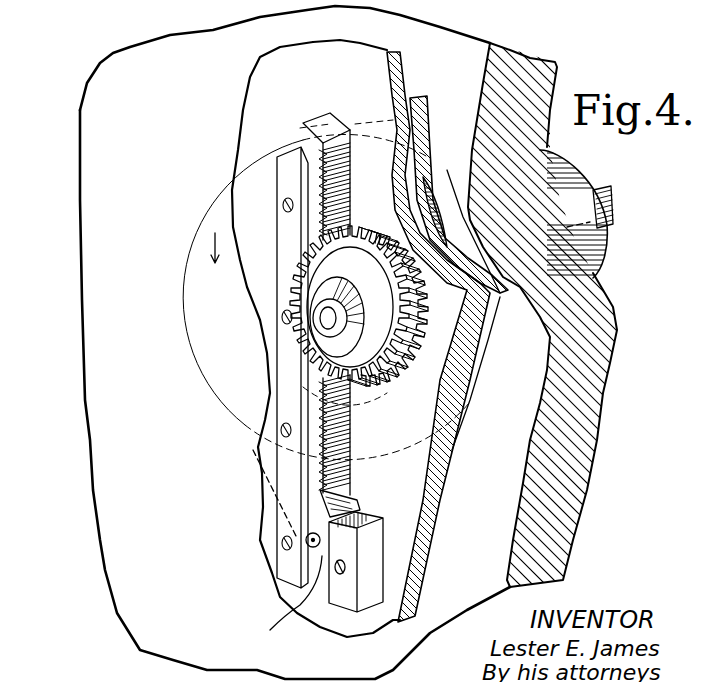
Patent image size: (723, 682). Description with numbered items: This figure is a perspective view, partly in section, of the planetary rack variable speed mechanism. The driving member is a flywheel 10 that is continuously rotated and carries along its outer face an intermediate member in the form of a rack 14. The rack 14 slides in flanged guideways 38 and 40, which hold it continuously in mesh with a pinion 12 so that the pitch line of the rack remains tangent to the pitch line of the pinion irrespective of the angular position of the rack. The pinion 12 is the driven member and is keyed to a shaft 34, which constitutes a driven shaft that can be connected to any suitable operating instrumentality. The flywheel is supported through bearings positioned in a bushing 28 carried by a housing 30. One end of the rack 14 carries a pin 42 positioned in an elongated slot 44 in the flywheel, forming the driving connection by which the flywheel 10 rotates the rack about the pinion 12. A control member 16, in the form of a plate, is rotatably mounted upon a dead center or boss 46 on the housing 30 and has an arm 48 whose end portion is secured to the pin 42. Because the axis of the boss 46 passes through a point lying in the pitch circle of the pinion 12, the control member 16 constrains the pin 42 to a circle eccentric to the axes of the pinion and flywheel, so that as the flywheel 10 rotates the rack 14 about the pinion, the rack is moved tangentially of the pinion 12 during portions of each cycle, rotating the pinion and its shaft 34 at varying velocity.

The flywheel 10 is at (400, 528).
The pinion 12 is at (389, 360).
The rack 14 is at (310, 147).
The control member 16 is at (205, 213).
The bushing 28 is at (573, 185).
The housing 30 is at (523, 387).
The shaft 34 is at (607, 197).
The flanged guideway 38 is at (283, 483).
The flanged guideway 40 is at (345, 590).
The pin 42 is at (306, 545).
The elongated slot 44 is at (313, 590).
The boss 46 is at (444, 200).
The arm 48 is at (253, 450).